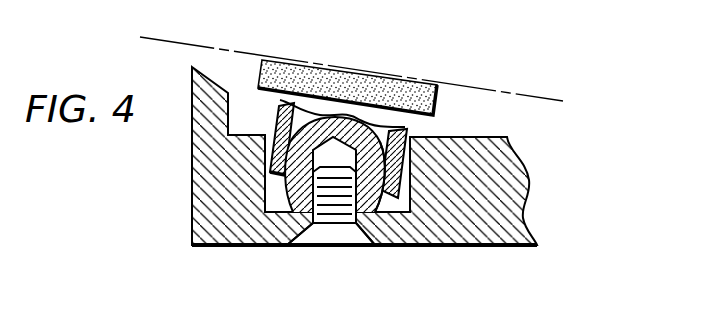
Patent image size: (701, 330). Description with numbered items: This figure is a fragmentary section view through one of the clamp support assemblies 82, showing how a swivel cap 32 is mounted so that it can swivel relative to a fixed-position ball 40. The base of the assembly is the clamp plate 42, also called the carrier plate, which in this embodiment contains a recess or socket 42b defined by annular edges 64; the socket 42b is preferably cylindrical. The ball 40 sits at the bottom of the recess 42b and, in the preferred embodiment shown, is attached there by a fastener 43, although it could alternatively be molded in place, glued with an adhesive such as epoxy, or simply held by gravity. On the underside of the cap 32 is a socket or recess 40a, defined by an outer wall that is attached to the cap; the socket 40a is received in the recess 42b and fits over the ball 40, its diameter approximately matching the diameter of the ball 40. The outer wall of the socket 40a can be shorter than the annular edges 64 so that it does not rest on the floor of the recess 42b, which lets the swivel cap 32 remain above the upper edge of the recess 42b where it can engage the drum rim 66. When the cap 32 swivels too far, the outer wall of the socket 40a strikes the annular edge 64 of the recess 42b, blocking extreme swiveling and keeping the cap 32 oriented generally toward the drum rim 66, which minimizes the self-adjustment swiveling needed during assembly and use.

The cap 32 is at (390, 78).
The ball 40 is at (315, 135).
The socket 40a is at (398, 160).
The clamp plate 42 is at (510, 224).
The recess 42b is at (412, 201).
The fastener 43 is at (333, 233).
The annular edges 64 is at (267, 138).
The drum rim 66 is at (528, 93).
The clamp support assembly 82 is at (278, 187).